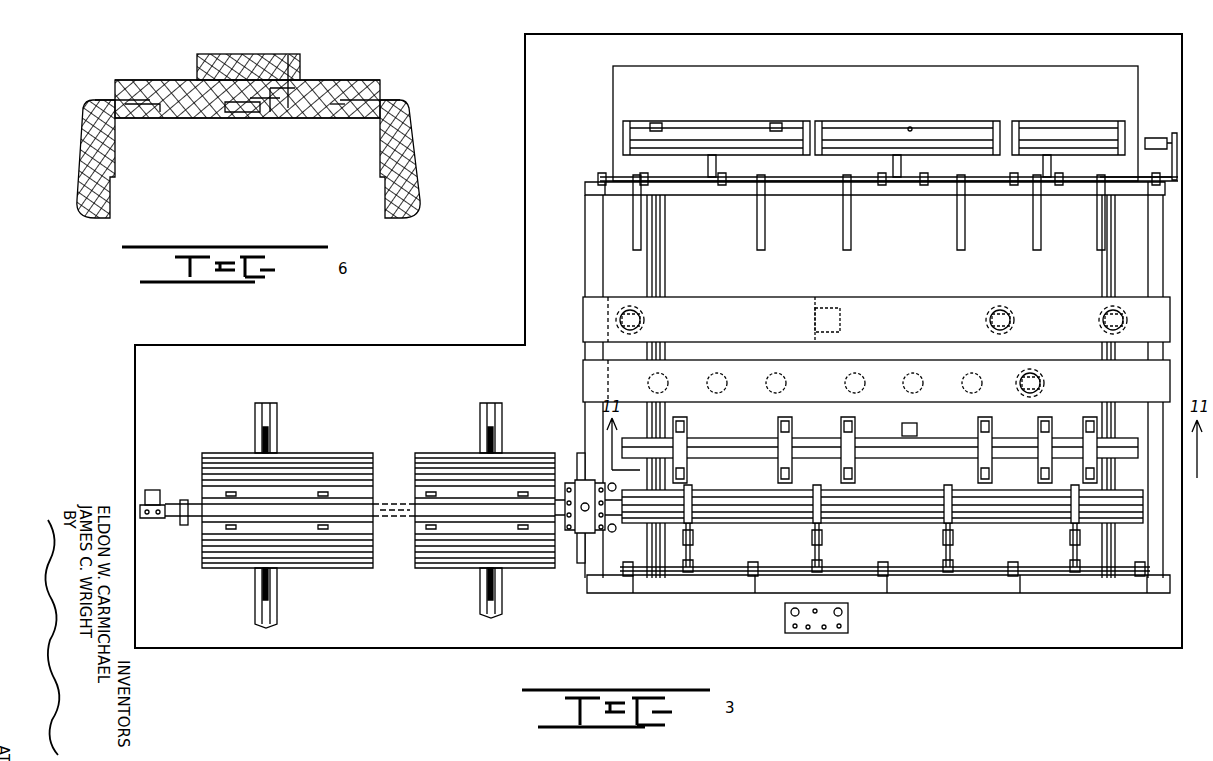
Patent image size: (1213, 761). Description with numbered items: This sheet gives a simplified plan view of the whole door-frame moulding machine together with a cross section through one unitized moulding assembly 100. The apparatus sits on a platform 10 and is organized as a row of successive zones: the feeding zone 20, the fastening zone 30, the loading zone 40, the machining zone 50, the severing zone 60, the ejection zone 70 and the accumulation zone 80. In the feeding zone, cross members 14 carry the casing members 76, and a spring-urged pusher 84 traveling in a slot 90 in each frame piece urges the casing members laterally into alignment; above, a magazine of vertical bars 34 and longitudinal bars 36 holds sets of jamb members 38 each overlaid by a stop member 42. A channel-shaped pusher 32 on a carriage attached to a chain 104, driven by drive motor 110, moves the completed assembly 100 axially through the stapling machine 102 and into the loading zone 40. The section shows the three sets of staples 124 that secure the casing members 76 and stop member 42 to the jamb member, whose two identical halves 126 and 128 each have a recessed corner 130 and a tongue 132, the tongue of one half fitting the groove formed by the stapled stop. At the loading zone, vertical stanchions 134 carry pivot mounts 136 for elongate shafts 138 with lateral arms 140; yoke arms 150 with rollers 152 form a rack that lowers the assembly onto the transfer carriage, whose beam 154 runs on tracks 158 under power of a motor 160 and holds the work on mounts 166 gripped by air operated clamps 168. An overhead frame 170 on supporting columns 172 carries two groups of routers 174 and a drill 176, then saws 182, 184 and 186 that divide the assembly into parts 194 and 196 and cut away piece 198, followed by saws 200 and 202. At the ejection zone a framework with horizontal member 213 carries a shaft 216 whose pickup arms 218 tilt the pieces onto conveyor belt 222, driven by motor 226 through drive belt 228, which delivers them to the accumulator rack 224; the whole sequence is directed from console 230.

In FIG. 3, the platform 10 is at (360, 630).
In FIG. 3, the cross members 14 is at (276, 403).
In FIG. 3, the feeding zone 20 is at (222, 573).
In FIG. 3, the fastening zone 30 is at (572, 572).
In FIG. 3, the pusher 32 is at (184, 500).
In FIG. 3, the vertical bars 34 is at (231, 492).
In FIG. 3, the longitudinal bars 36 is at (415, 487).
In FIG. 6, the jamb members 38 is at (160, 80).
In FIG. 3, the jamb members 38 is at (200, 520).
In FIG. 3, the loading zone 40 is at (1003, 545).
In FIG. 6, the stop members 42 is at (220, 54).
In FIG. 3, the stop members 42 is at (415, 510).
In FIG. 3, the machining zone 50 is at (622, 374).
In FIG. 3, the severing zone 60 is at (748, 314).
In FIG. 3, the ejection zone 70 is at (612, 222).
In FIG. 6, the casing members 76 is at (83, 155).
In FIG. 3, the casing members 76 is at (418, 455).
In FIG. 3, the accumulation zone 80 is at (1050, 66).
In FIG. 3, the pusher 84 is at (268, 438).
In FIG. 3, the slot 90 is at (266, 403).
In FIG. 6, the assembly of moulding members 100 is at (395, 72).
In FIG. 3, the assembly of moulding members 100 is at (795, 525).
In FIG. 3, the stapling machine 102 is at (579, 453).
In FIG. 3, the chain 104 is at (140, 508).
In FIG. 3, the drive motor 110 is at (148, 490).
In FIG. 6, the staples 124 is at (120, 95).
In FIG. 6, the jamb half 126 is at (160, 112).
In FIG. 6, the jamb half 128 is at (330, 110).
In FIG. 6, the recessed corner 130 is at (232, 112).
In FIG. 6, the tongue 132 is at (262, 70).
In FIG. 3, the vertical stanchions 134 is at (634, 578).
In FIG. 3, the pivot mounts 136 is at (882, 566).
In FIG. 3, the elongate shafts 138 is at (765, 570).
In FIG. 3, the lateral arms 140 is at (693, 552).
In FIG. 3, the arms 150 is at (692, 488).
In FIG. 3, the roller 152 is at (820, 527).
In FIG. 3, the beam 154 is at (912, 458).
In FIG. 3, the tracks 158 is at (665, 268).
In FIG. 3, the motor 160 is at (902, 428).
In FIG. 3, the mounts 166 is at (687, 436).
In FIG. 3, the air operated clamps 168 is at (680, 424).
In FIG. 3, the overhead frame 170 is at (895, 300).
In FIG. 3, the supporting columns 172 is at (612, 322).
In FIG. 3, the routers 174 is at (666, 374).
In FIG. 3, the drill 176 is at (720, 373).
In FIG. 3, the saw 182 is at (820, 308).
In FIG. 3, the saw 184 is at (634, 306).
In FIG. 3, the saw 186 is at (994, 306).
In FIG. 3, the part 194 is at (710, 121).
In FIG. 3, the part 196 is at (890, 121).
In FIG. 3, the piece 198 is at (1060, 121).
In FIG. 3, the saw 200 is at (1046, 378).
In FIG. 3, the saw 202 is at (1104, 306).
In FIG. 3, the horizontal member 213 is at (600, 195).
In FIG. 3, the shaft 216 is at (604, 178).
In FIG. 3, the pickup arms 218 is at (757, 228).
In FIG. 3, the conveyor belt 222 is at (708, 160).
In FIG. 3, the accumulator rack 224 is at (795, 75).
In FIG. 3, the motor 226 is at (1150, 138).
In FIG. 3, the drive belt 228 is at (1170, 175).
In FIG. 3, the console 230 is at (848, 620).